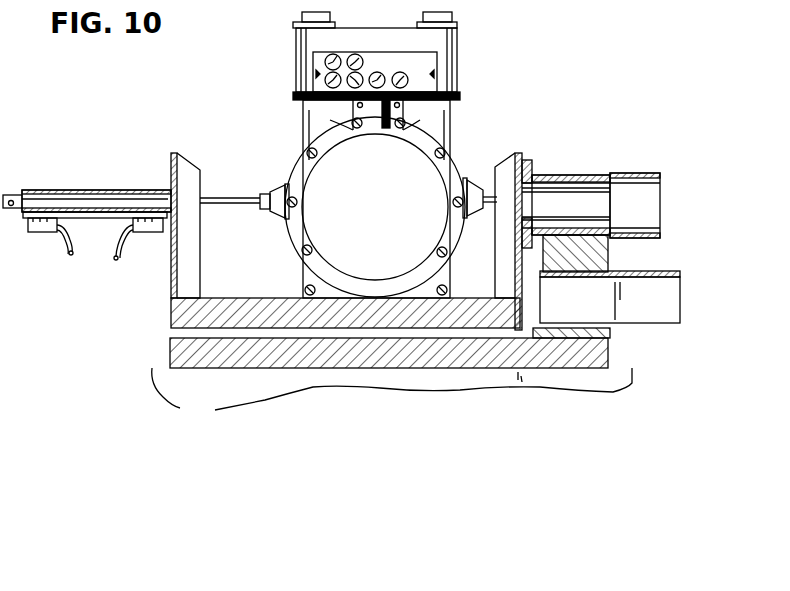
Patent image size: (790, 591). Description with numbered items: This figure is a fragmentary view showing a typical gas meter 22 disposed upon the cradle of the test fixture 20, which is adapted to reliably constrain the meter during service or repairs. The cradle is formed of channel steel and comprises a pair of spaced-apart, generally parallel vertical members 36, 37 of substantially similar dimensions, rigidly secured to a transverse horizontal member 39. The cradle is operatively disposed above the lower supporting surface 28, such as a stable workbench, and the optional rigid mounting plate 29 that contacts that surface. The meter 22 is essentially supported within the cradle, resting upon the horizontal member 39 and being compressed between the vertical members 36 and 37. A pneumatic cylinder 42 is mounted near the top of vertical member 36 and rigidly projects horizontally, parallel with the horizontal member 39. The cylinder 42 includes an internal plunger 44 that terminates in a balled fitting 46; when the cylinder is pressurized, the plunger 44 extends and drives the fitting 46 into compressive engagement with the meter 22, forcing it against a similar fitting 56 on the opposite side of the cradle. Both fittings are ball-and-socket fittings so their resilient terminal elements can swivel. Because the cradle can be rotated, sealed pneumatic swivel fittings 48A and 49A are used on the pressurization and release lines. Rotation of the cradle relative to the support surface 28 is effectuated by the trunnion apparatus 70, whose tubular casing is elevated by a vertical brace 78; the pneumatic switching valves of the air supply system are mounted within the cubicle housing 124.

The test fixture 20 is at (616, 89).
The gas meter 22 is at (463, 109).
The lower supporting surface 28 is at (392, 389).
The mounting plate 29 is at (188, 358).
The vertical cradle member 36 is at (192, 173).
The vertical cradle member 37 is at (505, 177).
The transverse horizontal member 39 is at (188, 318).
The pneumatic cylinder 42 is at (123, 178).
The plunger 44 is at (240, 203).
The balled fitting 46 is at (277, 187).
The pneumatic swivel fitting 48A is at (50, 232).
The pneumatic swivel fitting 49A is at (153, 232).
The fitting 56 is at (480, 217).
The trunnion apparatus 70 is at (614, 170).
The vertical brace 78 is at (597, 262).
The housing 124 is at (663, 300).